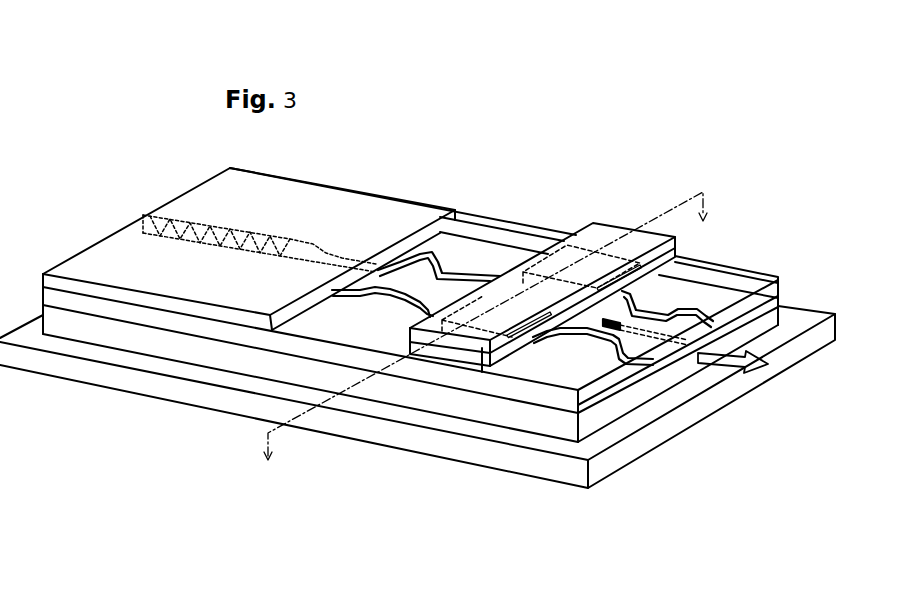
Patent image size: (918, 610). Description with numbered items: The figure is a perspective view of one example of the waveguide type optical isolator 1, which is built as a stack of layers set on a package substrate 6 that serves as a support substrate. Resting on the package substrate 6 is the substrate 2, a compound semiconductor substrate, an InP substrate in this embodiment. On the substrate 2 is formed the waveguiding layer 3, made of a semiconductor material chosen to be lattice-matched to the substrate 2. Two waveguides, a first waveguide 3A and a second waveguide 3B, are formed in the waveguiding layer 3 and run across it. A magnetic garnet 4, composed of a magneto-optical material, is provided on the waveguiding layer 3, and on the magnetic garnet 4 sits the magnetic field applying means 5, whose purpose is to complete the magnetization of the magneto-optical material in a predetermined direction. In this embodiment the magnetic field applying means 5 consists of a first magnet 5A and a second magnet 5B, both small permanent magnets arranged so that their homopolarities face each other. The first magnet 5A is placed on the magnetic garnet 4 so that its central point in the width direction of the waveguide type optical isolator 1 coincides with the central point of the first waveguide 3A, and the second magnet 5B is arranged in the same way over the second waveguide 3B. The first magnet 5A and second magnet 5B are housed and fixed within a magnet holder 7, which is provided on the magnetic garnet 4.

The waveguide type optical isolator 1 is at (668, 187).
The substrate 2 is at (539, 416).
The waveguiding layer 3 is at (607, 340).
The first waveguide 3A is at (638, 362).
The second waveguide 3B is at (715, 321).
The magnetic garnet 4 is at (440, 353).
The magnetic field applying means 5 is at (557, 143).
The first magnet 5A is at (477, 305).
The second magnet 5B is at (560, 240).
The package substrate 6 is at (572, 448).
The magnet holder 7 is at (675, 250).